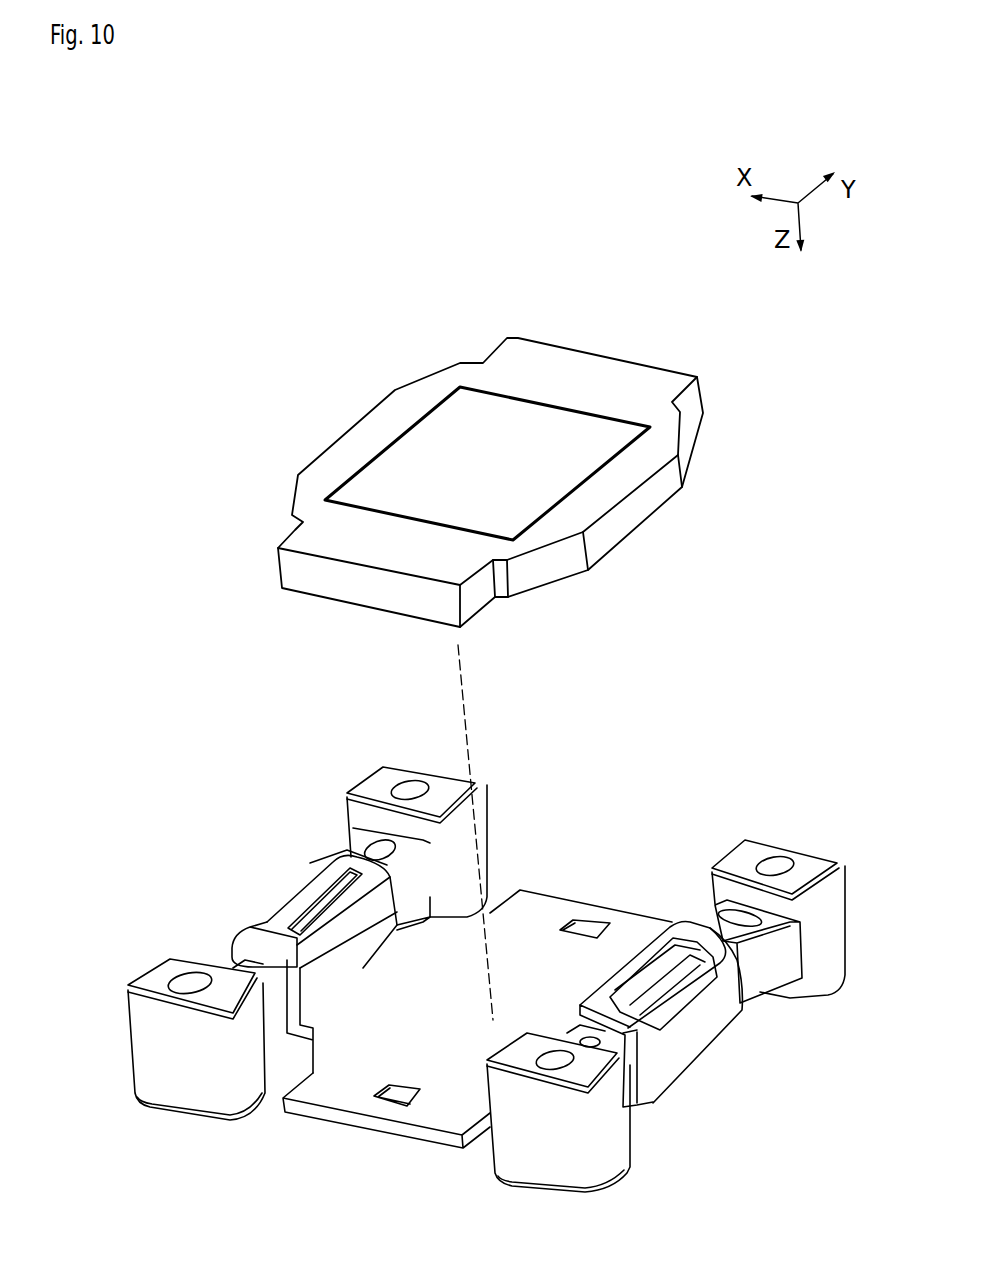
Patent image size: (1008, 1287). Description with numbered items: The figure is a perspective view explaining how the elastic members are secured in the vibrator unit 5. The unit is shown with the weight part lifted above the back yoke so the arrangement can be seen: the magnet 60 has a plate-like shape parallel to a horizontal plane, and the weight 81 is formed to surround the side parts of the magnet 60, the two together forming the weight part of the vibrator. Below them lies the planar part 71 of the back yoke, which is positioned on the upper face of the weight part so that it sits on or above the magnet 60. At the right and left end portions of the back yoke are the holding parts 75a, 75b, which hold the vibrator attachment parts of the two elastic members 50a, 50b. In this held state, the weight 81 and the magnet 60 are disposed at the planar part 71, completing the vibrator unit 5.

The vibrator unit 5 is at (187, 222).
The magnet 60 is at (462, 437).
The weight 81 is at (573, 380).
The planar part 71 is at (423, 1048).
The elastic member 50a is at (334, 782).
The elastic member 50b is at (706, 848).
The holding part 75a is at (232, 918).
The holding part 75b is at (690, 1083).